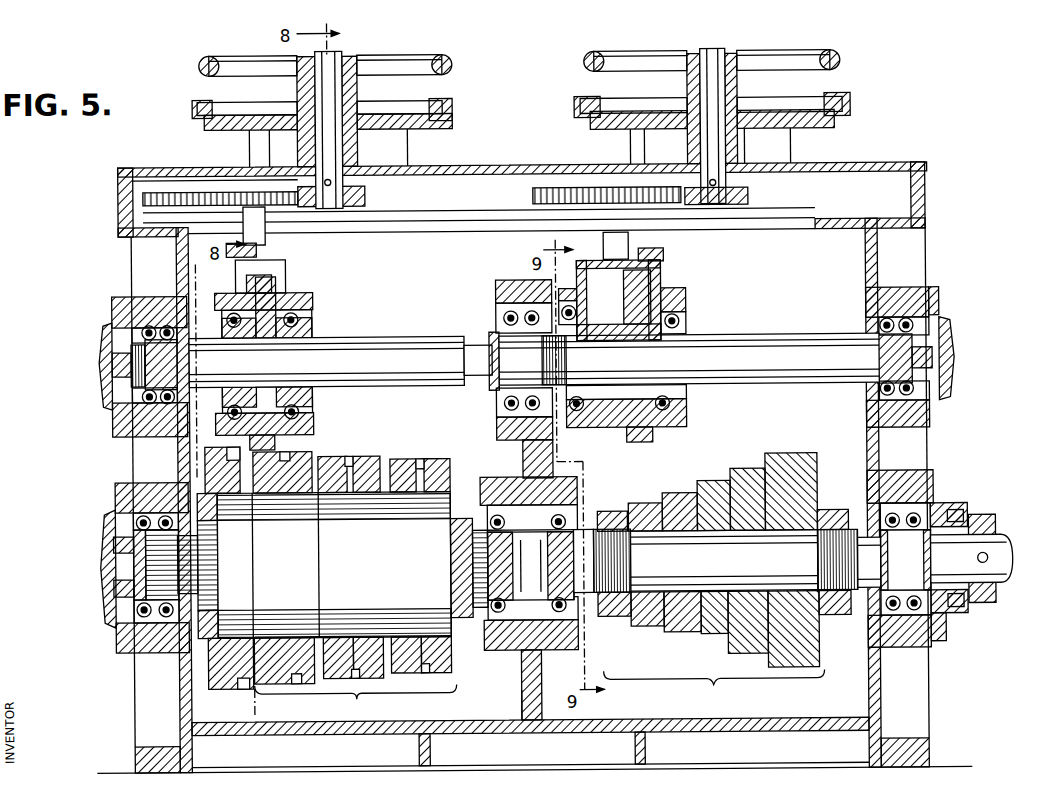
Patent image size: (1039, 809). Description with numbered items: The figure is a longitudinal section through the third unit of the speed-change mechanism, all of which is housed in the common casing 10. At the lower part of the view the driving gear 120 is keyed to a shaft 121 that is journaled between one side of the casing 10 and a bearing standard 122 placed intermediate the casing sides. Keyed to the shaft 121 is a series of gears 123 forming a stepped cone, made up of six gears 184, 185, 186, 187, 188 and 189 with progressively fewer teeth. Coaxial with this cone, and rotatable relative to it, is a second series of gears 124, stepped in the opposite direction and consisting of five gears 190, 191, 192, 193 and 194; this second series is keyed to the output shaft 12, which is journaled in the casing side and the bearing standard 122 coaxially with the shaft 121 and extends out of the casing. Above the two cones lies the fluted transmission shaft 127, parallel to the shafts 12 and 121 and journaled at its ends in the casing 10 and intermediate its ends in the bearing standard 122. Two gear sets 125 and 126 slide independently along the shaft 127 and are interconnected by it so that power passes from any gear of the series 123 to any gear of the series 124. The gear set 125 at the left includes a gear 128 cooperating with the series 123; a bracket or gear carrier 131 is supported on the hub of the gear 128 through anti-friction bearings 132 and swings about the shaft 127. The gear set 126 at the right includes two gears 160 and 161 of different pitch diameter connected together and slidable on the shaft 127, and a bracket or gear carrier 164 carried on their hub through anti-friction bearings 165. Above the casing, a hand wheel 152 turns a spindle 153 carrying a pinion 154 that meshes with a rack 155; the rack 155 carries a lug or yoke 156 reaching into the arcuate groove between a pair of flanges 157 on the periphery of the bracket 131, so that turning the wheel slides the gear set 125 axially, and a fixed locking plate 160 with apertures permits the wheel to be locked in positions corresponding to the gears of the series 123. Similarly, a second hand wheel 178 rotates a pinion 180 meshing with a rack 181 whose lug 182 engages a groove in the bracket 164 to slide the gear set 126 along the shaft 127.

The casing 10 is at (186, 268).
The output shaft 12 is at (995, 548).
The driving gear 120 is at (210, 460).
The shaft 121 is at (352, 564).
The bearing standard 122 is at (521, 698).
The series of gears 123 is at (356, 703).
The second series of gears 124 is at (714, 689).
The gear set 125 is at (306, 328).
The second gear set 126 is at (626, 284).
The transmission shaft 127 is at (397, 329).
The gear 128 is at (280, 277).
The bracket or gear carrier 131 is at (305, 299).
The anti-friction bearings 132 is at (300, 407).
The hand wheel 152 is at (233, 55).
The spindle 153 is at (340, 152).
The pinion 154 is at (368, 195).
The rack 155 is at (218, 190).
The lug or yoke 156 is at (290, 230).
The flanges 157 is at (262, 247).
The locking plate / gear 160 is at (440, 128).
The gear 161 is at (642, 443).
The bracket or gear carrier 164 is at (688, 293).
The anti-friction bearings 165 is at (688, 407).
The hand wheel 178 is at (823, 52).
The pinion 180 is at (752, 195).
The rack 181 is at (535, 195).
The lug 182 is at (655, 232).
The gear 184 is at (235, 446).
The gear 185 is at (278, 451).
The gear 186 is at (330, 456).
The gear 187 is at (358, 456).
The gear 188 is at (405, 459).
The gear 189 is at (440, 460).
The gear 190 is at (625, 512).
The gear 191 is at (675, 494).
The gear 192 is at (710, 482).
The gear 193 is at (747, 470).
The gear 194 is at (790, 455).